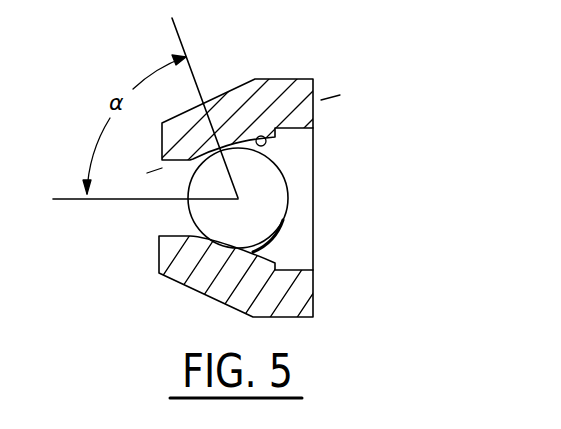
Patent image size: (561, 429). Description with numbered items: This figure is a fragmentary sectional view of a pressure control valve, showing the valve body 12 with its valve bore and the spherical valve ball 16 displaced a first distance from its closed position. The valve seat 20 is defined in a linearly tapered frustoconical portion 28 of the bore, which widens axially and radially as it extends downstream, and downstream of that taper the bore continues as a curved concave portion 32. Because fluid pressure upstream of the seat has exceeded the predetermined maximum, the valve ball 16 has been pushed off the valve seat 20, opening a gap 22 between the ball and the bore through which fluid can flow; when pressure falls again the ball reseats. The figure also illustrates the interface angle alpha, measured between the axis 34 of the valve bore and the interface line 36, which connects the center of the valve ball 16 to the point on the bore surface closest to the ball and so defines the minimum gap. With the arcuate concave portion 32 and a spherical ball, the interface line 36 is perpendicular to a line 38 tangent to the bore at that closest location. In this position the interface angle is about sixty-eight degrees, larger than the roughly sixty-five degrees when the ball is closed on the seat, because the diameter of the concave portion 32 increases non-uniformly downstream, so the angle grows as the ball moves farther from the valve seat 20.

The valve body 12 is at (312, 78).
The valve ball 16 is at (262, 188).
The valve seat 20 is at (197, 160).
The gap 22 is at (252, 255).
The frustoconical portion 28 is at (192, 232).
The concave portion 32 is at (267, 136).
The axis 34 is at (68, 200).
The interface line 36 is at (177, 30).
The tangent line 38 is at (367, 84).